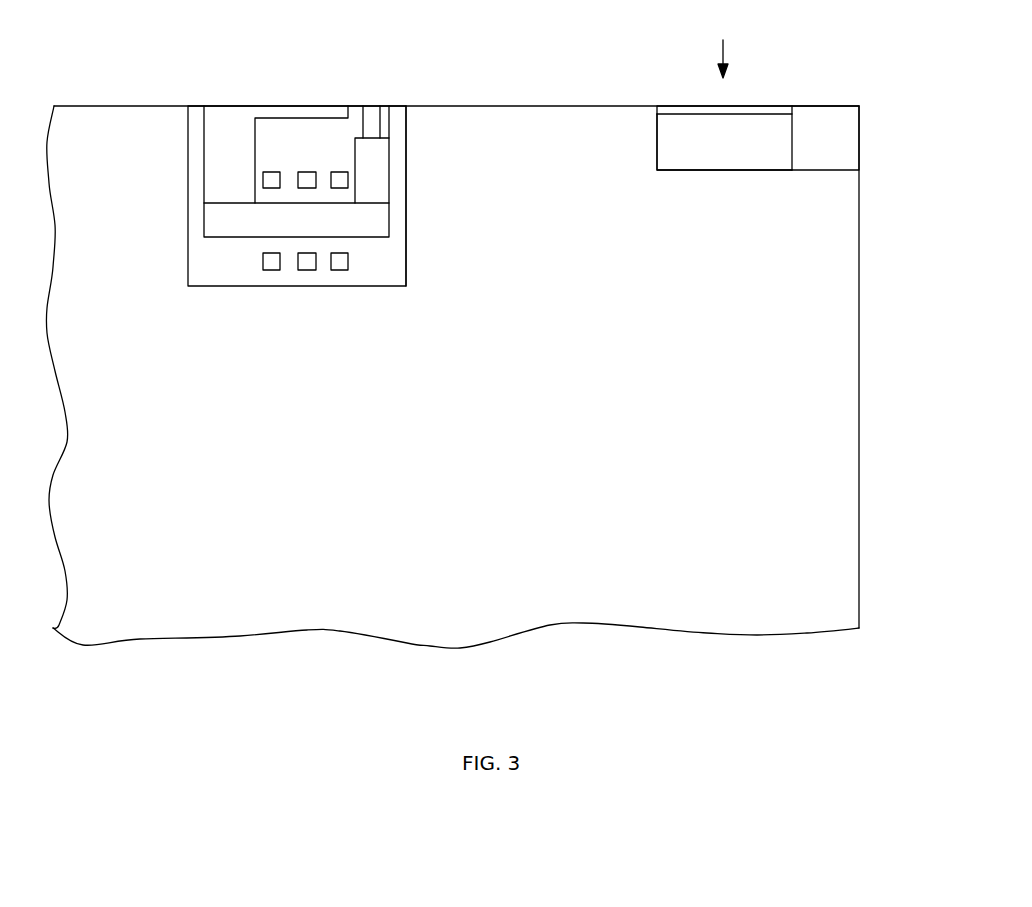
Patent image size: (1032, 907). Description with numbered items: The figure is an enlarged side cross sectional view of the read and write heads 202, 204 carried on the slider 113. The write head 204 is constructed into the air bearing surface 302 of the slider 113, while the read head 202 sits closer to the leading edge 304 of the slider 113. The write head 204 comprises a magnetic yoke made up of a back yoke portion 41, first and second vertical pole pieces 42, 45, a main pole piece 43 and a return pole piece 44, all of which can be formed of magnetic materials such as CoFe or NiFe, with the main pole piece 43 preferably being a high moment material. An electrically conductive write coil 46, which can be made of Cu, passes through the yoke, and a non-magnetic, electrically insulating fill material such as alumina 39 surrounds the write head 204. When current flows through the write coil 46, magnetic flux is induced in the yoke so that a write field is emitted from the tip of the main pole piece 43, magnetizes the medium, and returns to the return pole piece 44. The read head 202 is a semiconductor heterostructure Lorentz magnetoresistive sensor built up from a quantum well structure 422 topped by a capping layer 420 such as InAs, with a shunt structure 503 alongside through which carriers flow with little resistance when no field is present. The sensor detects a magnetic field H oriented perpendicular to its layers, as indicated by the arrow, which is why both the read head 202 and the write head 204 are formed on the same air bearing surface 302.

The slider 113 is at (495, 410).
The air bearing surface 302 is at (520, 105).
The leading edge 304 is at (859, 254).
The write head 204 is at (326, 96).
The second vertical pole piece 45 is at (215, 156).
The alumina 39 is at (400, 192).
The return pole piece 44 is at (295, 112).
The main pole piece 43 is at (375, 125).
The first vertical pole piece 42 is at (378, 160).
The back yoke portion 41 is at (377, 225).
The write coil 46 is at (337, 172).
The read head 202 is at (695, 90).
The capping layer 420 is at (737, 110).
The quantum well structure 422 is at (715, 162).
The shunt structure 503 is at (817, 112).
The magnetic field H is at (723, 46).